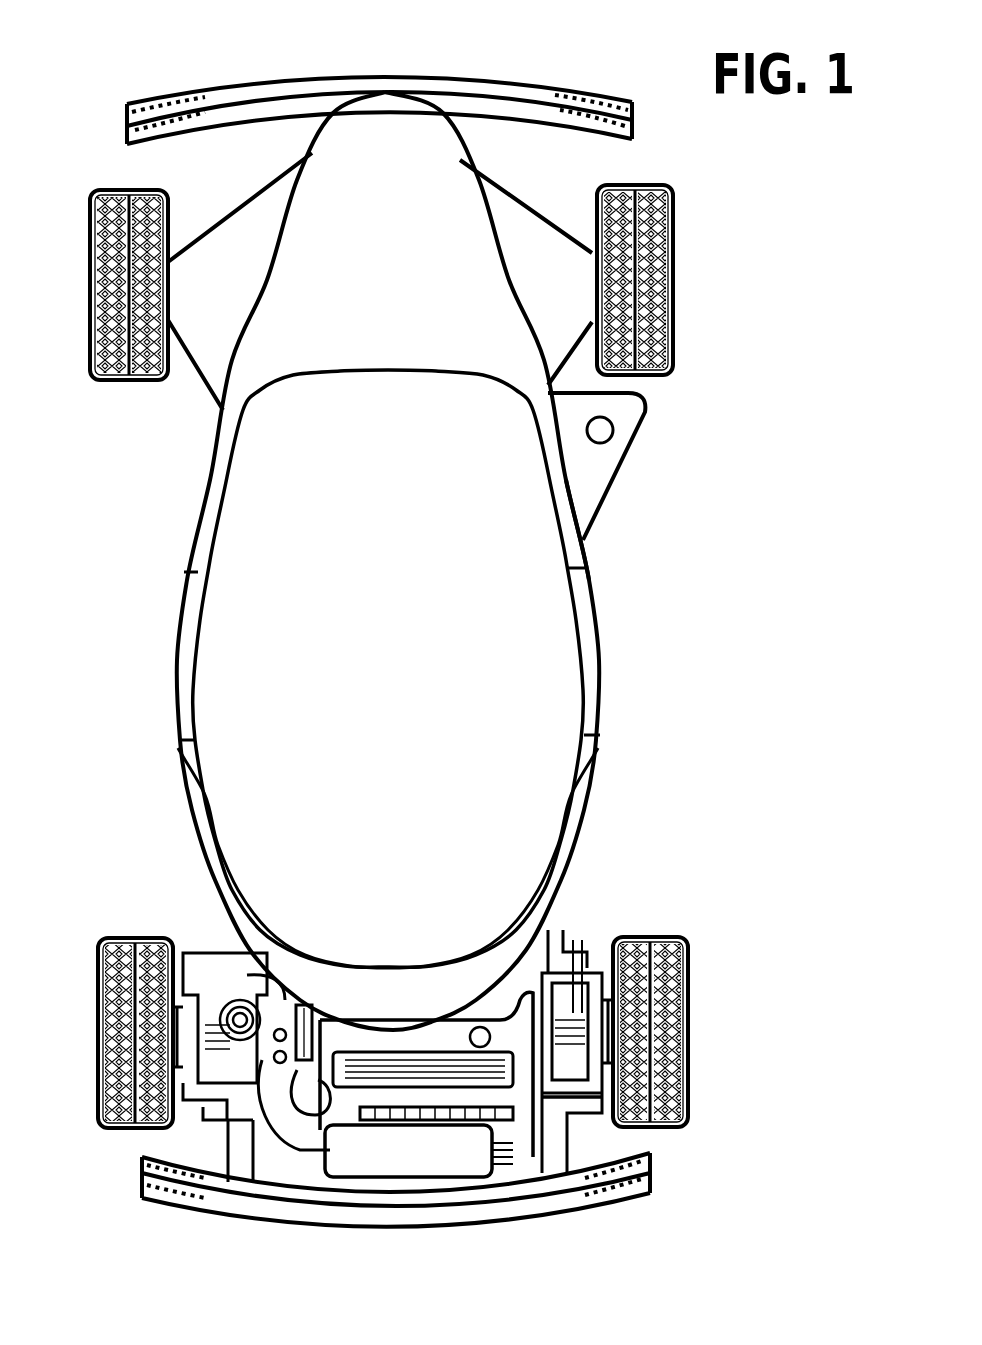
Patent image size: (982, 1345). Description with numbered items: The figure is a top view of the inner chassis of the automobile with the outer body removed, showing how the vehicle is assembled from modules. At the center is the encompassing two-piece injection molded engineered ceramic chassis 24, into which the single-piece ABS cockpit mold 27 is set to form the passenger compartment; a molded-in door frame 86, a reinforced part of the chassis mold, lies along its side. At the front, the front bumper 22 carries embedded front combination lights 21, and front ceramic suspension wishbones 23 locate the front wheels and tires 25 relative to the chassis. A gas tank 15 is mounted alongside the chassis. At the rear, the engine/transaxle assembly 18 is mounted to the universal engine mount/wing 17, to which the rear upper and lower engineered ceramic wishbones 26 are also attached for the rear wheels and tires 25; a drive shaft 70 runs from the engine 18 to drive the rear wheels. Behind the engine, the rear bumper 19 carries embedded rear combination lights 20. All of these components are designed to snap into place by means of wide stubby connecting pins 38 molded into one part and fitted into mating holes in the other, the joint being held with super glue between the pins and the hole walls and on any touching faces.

The gas tank 15 is at (612, 492).
The engine mount/wing 17 is at (207, 853).
The engine/transaxle assembly 18 is at (327, 1113).
The rear bumper 19 is at (470, 1223).
The rear combination lights 20 is at (198, 1193).
The front combination lights 21 is at (155, 108).
The front bumper 22 is at (478, 78).
The front ceramic suspension wishbones 23 is at (513, 193).
The chassis 24 is at (195, 503).
The wheels and tires 25 is at (676, 330).
The rear wishbones 26 is at (580, 1088).
The cockpit mold 27 is at (243, 690).
The connecting pins 38 is at (547, 1183).
The drive shaft 70 is at (577, 940).
The molded-in door frame 86 is at (595, 680).